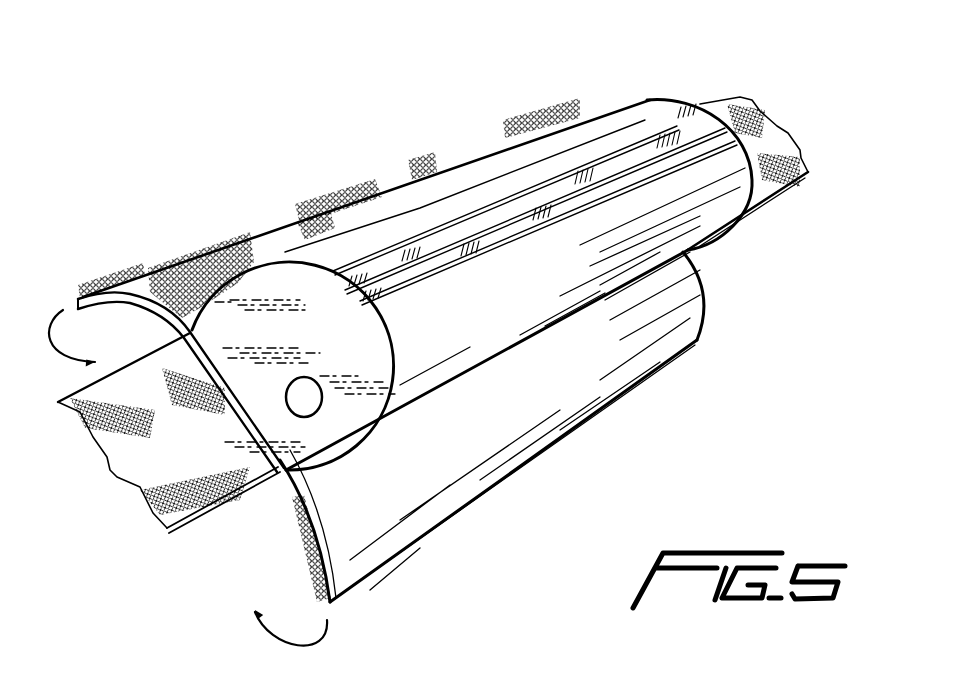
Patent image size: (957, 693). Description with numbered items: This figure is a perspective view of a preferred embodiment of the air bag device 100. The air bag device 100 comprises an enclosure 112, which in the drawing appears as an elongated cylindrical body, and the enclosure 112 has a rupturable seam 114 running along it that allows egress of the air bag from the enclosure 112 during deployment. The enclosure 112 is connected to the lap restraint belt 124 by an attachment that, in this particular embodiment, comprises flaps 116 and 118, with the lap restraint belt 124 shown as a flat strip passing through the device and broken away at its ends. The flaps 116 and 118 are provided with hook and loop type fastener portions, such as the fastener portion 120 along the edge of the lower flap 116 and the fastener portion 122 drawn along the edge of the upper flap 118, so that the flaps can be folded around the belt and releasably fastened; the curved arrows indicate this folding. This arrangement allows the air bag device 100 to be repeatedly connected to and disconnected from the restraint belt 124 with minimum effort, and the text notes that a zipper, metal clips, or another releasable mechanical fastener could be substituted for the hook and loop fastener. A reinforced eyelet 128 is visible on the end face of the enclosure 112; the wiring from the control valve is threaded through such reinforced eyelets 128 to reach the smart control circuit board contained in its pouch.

The air bag device 100 is at (68, 157).
The enclosure 112 is at (720, 238).
The rupturable seam 114 is at (686, 128).
The flap 116 is at (517, 470).
The flap 118 is at (192, 250).
The hook and loop type fastener portion 120 is at (307, 575).
The adhesive beads on upper flap edge 122 is at (378, 213).
The lap restraint belt 124 is at (107, 463).
The reinforced eyelets 128 is at (300, 422).